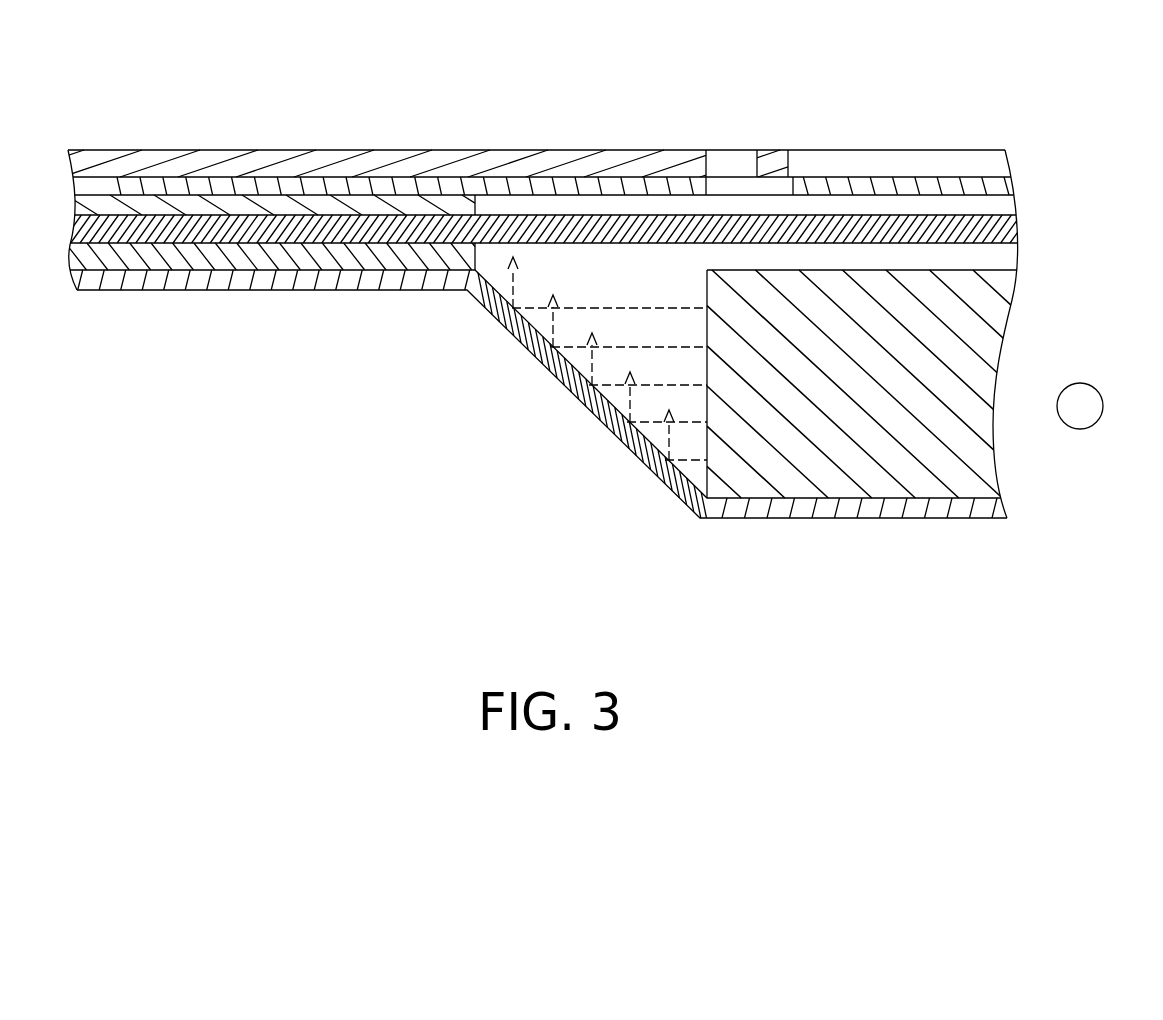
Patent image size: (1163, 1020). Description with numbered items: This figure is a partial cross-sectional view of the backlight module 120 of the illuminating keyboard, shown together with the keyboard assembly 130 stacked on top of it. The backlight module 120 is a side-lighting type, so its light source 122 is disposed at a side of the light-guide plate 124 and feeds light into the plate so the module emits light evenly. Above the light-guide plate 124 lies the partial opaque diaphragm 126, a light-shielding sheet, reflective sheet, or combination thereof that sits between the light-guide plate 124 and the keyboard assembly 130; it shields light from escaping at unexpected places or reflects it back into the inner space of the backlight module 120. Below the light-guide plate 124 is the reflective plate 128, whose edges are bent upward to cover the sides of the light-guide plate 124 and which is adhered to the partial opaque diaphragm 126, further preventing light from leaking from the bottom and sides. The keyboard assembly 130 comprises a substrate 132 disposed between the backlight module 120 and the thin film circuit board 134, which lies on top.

The backlight module 120 is at (1118, 590).
The light source 122 is at (1079, 430).
The light-guide plate 124 is at (920, 452).
The partial opaque diaphragm 126 is at (608, 230).
The reflective plate 128 is at (801, 507).
The keyboard assembly 130 is at (477, 78).
The substrate 132 is at (470, 188).
The thin film circuit board 134 is at (390, 163).